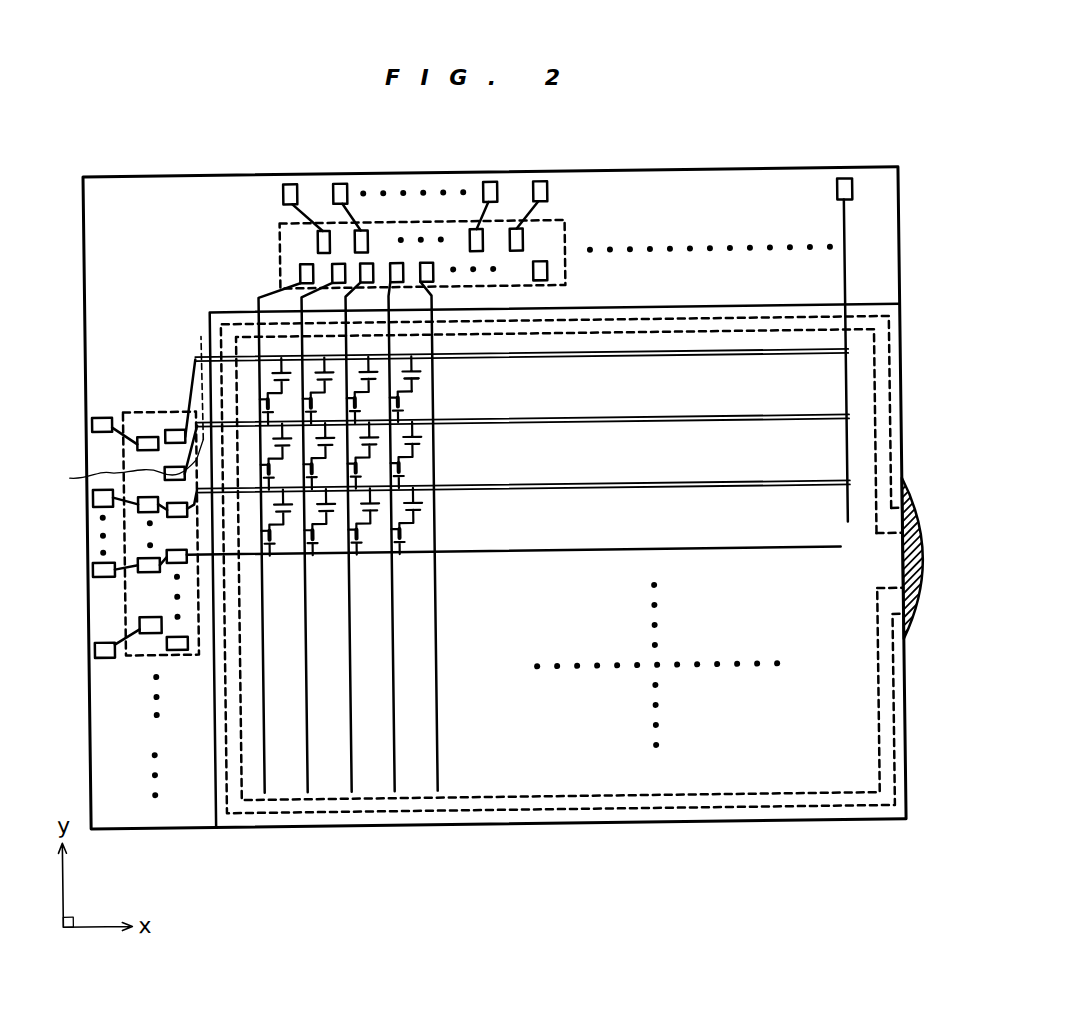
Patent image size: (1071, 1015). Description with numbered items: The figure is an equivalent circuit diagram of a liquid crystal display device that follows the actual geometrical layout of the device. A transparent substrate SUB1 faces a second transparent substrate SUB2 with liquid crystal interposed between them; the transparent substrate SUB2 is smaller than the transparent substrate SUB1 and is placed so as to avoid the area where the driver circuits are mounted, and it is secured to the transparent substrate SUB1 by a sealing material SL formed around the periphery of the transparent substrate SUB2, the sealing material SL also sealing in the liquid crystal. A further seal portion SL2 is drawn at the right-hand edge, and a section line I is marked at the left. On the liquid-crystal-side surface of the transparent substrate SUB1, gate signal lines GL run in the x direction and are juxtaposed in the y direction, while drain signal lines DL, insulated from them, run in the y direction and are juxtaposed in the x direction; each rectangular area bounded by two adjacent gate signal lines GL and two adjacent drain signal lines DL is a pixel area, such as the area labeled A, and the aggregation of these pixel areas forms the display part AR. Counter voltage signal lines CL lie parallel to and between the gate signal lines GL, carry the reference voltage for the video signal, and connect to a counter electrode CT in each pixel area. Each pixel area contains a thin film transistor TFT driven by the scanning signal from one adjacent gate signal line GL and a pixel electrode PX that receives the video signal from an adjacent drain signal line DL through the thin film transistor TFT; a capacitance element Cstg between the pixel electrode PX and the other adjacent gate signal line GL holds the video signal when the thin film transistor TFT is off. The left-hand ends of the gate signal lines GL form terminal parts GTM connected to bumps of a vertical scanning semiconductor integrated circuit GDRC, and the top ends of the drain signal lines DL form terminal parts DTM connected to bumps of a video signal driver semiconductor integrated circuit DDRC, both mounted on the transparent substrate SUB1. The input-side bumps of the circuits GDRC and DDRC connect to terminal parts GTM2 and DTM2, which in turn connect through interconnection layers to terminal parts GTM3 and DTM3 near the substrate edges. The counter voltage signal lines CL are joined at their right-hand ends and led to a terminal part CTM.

The transparent substrate SUB1 is at (129, 829).
The transparent substrate SUB2 is at (209, 829).
The sealing material SL is at (412, 804).
The sealing material (filling port) SL2 is at (898, 572).
The terminal part CTM is at (845, 188).
The semiconductor integrated circuit DDRC is at (564, 238).
The terminal part DTM is at (298, 275).
The terminal part DTM2 is at (317, 245).
The terminal part DTM3 is at (283, 195).
The drain signal line DL is at (257, 790).
The counter voltage signal line CL is at (795, 361).
The gate signal line GL is at (818, 491).
The capacitance element Cstg is at (419, 377).
The counter electrode CT is at (417, 384).
The thin film transistor TFT is at (399, 411).
The pixel electrode PX is at (405, 461).
The pixel region A is at (438, 526).
The semiconductor integrated circuit GDRC is at (136, 658).
The terminal part GTM is at (173, 431).
The terminal part GTM2 is at (147, 438).
The terminal part GTM3 is at (100, 418).
The section line I-I' I is at (133, 401).
The display part AR is at (626, 732).